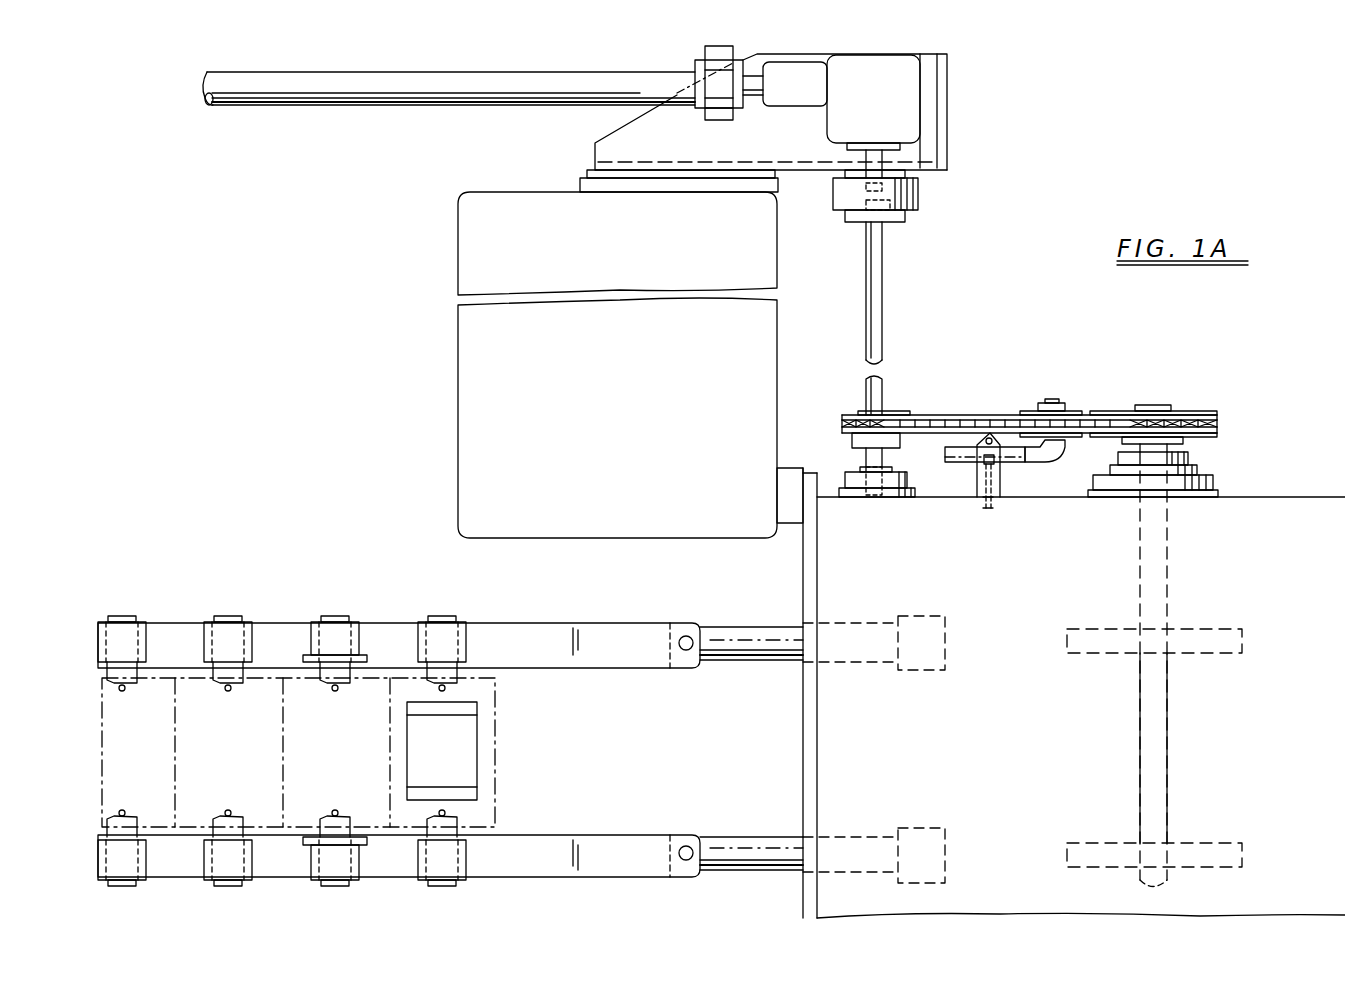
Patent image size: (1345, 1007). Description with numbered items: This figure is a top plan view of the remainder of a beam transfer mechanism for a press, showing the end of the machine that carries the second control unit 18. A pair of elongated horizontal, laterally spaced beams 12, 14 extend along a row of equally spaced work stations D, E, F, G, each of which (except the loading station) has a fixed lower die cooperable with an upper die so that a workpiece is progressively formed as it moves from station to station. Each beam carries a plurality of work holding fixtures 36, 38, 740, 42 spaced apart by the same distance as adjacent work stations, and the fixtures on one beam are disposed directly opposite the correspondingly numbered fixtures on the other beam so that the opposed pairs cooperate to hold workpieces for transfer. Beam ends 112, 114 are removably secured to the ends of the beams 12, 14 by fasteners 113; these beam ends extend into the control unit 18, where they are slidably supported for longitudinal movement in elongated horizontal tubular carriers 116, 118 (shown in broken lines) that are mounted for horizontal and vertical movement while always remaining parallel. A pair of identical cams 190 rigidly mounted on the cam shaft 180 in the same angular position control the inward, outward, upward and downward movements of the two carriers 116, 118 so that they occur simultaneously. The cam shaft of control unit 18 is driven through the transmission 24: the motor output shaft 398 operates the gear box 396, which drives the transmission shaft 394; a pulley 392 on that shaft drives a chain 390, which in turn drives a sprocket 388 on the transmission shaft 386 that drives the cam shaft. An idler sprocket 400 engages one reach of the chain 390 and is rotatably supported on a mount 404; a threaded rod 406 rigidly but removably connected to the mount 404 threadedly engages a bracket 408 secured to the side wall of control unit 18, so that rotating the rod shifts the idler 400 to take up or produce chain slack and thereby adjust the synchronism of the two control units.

The motor output shaft 398 is at (270, 97).
The gear box 396 is at (908, 121).
The transmission 24 is at (920, 223).
The transmission shaft 394 is at (878, 348).
The pulley 392 is at (852, 412).
The chain 390 is at (990, 393).
The idler sprocket 400 is at (1073, 411).
The sprocket 388 is at (1202, 413).
The transmission shaft 386 is at (1167, 510).
The threaded rod 406 is at (963, 453).
The bracket 408 is at (1000, 487).
The mount 404 is at (1045, 450).
The control unit 18 is at (1074, 693).
The beam 12 is at (626, 631).
The beam 14 is at (627, 868).
The beam end 112 is at (742, 632).
The beam end 114 is at (745, 862).
The fastener 113 is at (686, 651).
The tubular carrier 118 is at (945, 655).
The tubular carrier 116 is at (945, 828).
The cam 190 is at (1242, 641).
The cam shaft 180 is at (1145, 728).
The work holding fixture 36 is at (143, 622).
The work holding fixture 38 is at (247, 622).
The work holding fixture 740 is at (366, 605).
The work holding fixture 42 is at (462, 622).
The work station D is at (298, 752).
The work station E is at (226, 752).
The work station F is at (335, 752).
The work station G is at (490, 810).